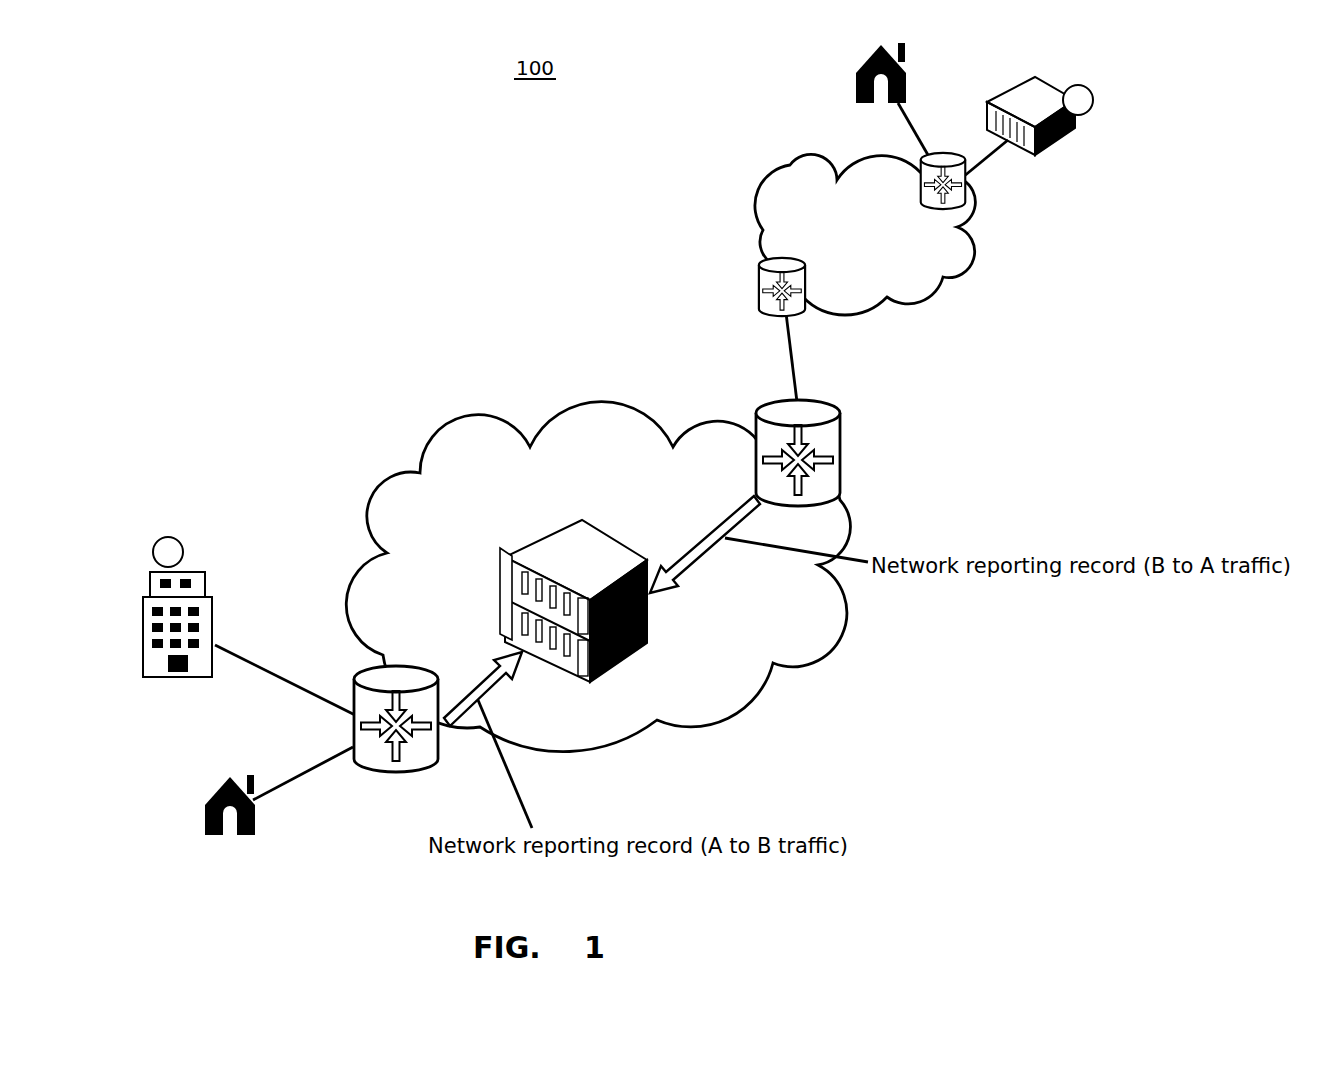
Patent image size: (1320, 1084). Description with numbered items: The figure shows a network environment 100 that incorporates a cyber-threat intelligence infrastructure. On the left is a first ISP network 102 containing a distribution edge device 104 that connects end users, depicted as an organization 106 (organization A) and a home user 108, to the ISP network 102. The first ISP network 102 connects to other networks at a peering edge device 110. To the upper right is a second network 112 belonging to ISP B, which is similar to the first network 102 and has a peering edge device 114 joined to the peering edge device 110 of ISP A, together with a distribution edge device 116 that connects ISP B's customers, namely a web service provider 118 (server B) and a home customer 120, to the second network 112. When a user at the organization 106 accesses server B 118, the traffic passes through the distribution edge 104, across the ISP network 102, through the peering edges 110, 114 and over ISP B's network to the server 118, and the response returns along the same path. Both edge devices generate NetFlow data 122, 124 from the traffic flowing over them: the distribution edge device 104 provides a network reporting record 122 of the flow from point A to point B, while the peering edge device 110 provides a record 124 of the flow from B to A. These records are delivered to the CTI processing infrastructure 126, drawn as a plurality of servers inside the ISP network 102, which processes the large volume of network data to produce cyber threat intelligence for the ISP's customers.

The network environment 100 is at (535, 68).
The first ISP network 102 is at (459, 425).
The distribution edge device 104 is at (401, 663).
The organization 106 is at (200, 572).
The home user 108 is at (207, 818).
The peering edge device 110 is at (760, 401).
The second network 112 is at (790, 165).
The peering edge device 114 is at (762, 273).
The distribution edge device 116 is at (965, 200).
The web service provider 118 is at (1060, 135).
The home customer 120 is at (855, 72).
The NetFlow data 122 is at (520, 684).
The NetFlow data 124 is at (745, 503).
The CTI processing infrastructure 126 is at (520, 556).